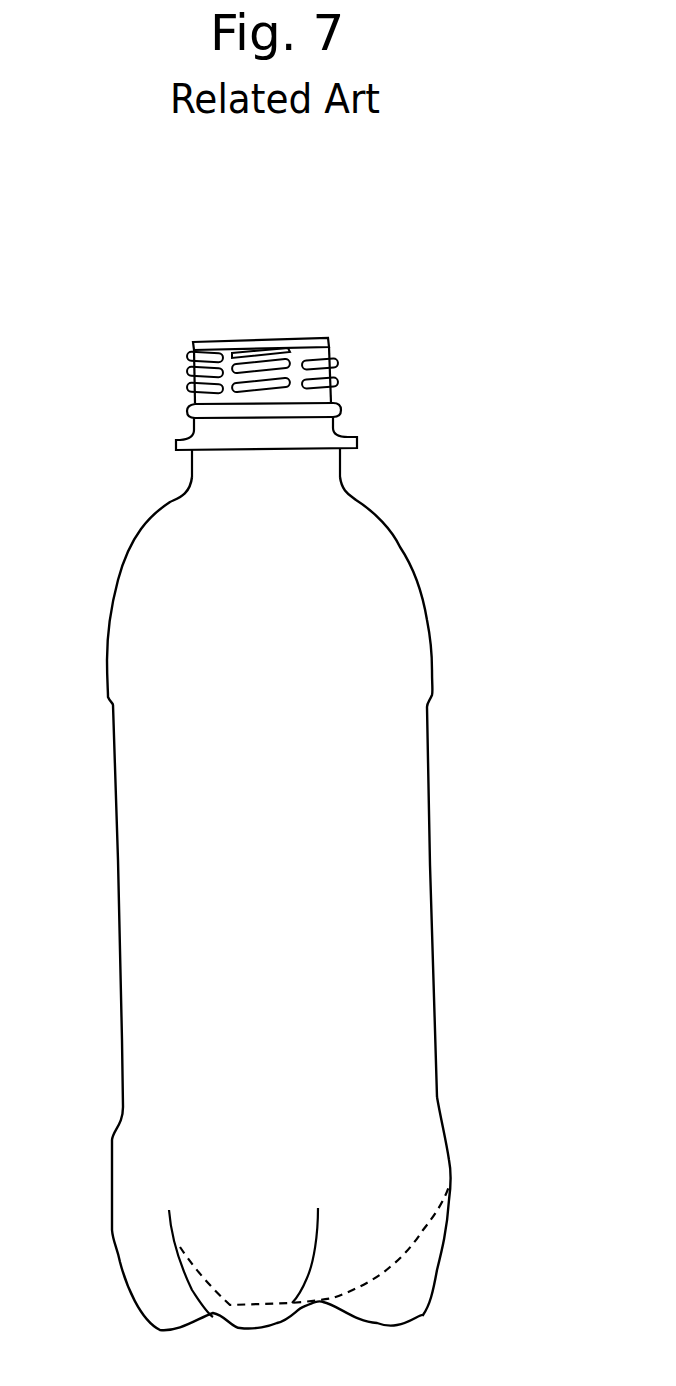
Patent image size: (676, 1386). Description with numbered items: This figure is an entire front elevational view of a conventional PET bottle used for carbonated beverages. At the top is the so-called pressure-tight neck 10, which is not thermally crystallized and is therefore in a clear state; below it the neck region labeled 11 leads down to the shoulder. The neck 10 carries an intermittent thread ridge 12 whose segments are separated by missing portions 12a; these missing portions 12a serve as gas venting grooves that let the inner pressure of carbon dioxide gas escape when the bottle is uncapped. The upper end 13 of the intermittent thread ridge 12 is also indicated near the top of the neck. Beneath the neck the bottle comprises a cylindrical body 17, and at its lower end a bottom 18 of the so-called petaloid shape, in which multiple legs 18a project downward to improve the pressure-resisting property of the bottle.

The pressure-tight neck 10 is at (318, 335).
The neck portion 11 is at (328, 394).
The intermittent thread ridge 12 is at (185, 387).
The missing portions 12a is at (232, 368).
The upper end of the intermittent thread ridge 13 is at (287, 350).
The body 17 is at (430, 865).
The bottom 18 is at (468, 1226).
The legs 18a is at (407, 1287).